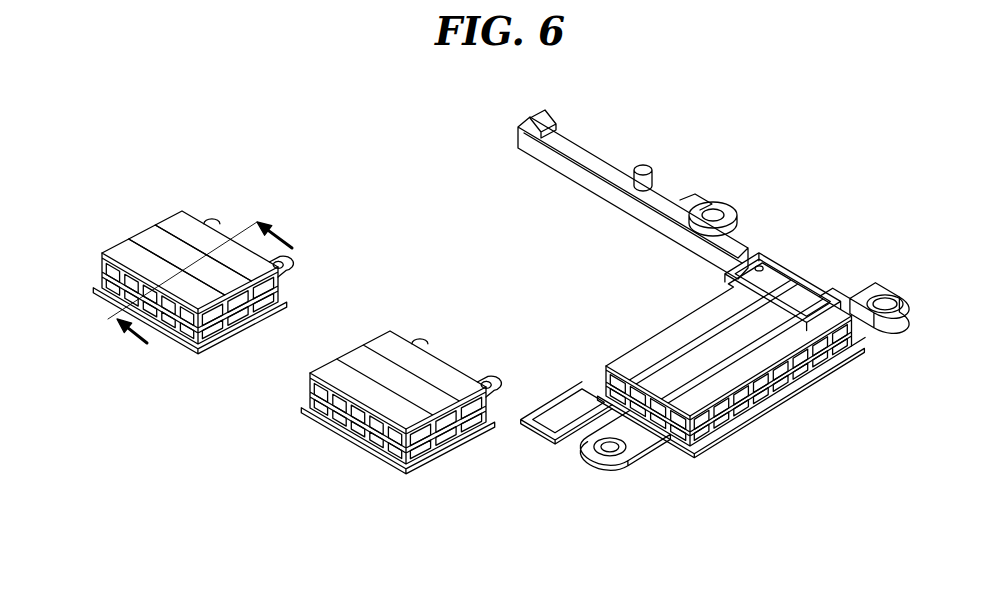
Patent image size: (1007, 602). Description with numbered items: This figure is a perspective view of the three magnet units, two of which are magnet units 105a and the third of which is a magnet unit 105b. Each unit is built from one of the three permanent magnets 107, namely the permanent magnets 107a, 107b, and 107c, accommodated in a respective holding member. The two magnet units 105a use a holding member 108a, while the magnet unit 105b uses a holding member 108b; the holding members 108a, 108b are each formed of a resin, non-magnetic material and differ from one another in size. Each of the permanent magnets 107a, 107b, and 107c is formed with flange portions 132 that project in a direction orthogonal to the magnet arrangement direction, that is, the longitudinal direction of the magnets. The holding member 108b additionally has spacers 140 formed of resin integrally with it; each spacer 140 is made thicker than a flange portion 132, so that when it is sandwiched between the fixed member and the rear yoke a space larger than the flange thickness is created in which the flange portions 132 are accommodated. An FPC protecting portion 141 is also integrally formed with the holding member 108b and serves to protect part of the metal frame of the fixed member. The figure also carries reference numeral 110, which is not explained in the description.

The magnet unit 105a is at (237, 208).
The magnet unit 105b is at (653, 317).
The permanent magnet 107 is at (40, 203).
The permanent magnet 107a is at (128, 250).
The permanent magnet 107b is at (148, 238).
The permanent magnet 107c is at (177, 212).
The holding member 108a is at (193, 333).
The holding member 108b is at (785, 397).
The insertion direction 110 is at (282, 228).
The flange portion 132 is at (278, 310).
The spacer 140 is at (645, 467).
The FPC protecting portion 141 is at (615, 197).